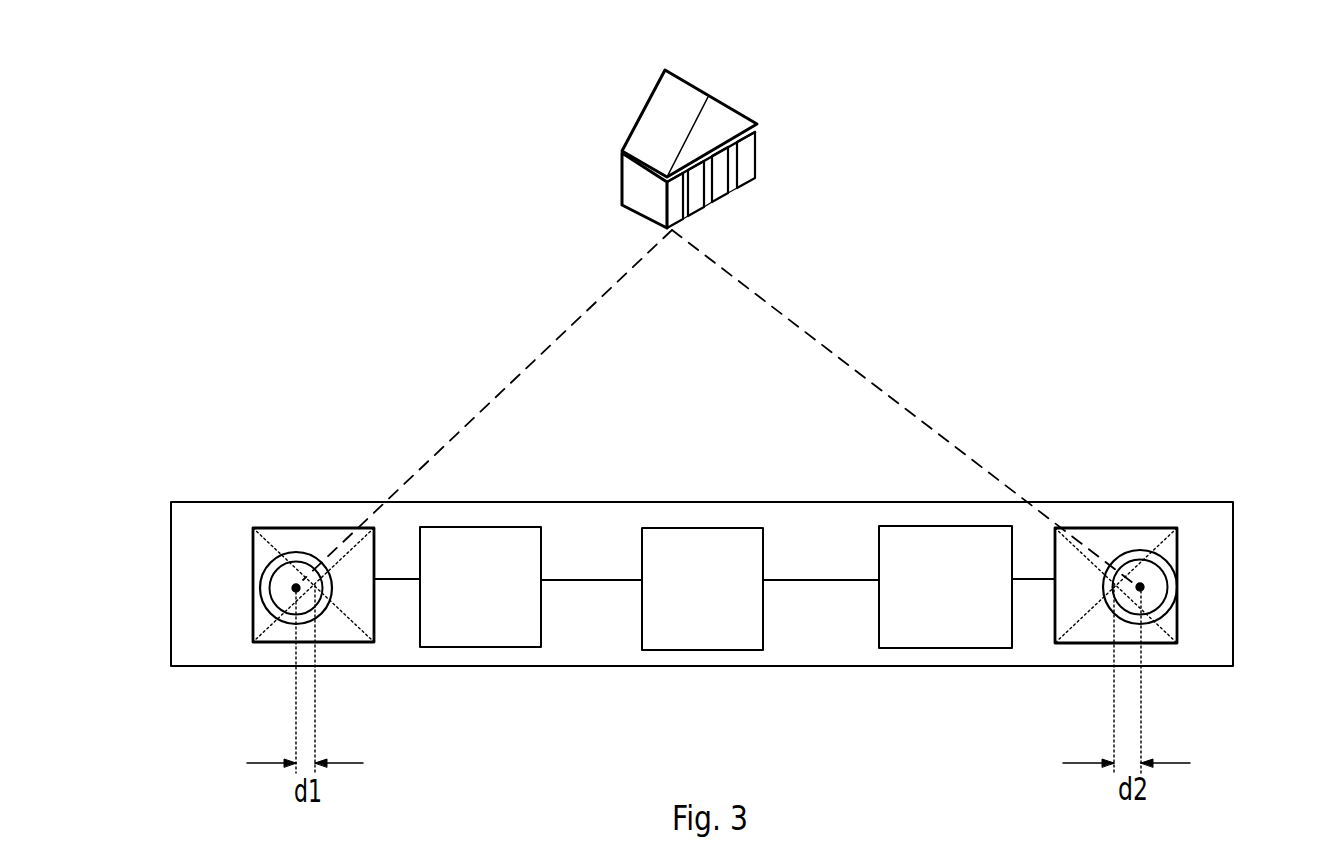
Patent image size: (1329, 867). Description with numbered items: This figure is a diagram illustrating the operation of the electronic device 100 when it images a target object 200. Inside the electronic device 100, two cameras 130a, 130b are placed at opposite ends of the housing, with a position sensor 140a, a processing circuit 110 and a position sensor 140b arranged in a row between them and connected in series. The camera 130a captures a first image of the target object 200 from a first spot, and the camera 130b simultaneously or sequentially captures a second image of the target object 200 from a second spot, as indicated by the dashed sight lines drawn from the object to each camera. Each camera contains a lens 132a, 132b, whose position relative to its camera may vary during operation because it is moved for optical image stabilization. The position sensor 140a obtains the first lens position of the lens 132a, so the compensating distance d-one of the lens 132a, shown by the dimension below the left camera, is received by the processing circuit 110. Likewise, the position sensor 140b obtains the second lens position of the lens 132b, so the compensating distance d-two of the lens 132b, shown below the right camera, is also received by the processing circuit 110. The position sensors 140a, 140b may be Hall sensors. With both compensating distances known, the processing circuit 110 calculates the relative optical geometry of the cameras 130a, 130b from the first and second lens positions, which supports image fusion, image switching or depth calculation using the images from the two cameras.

The electronic device 100 is at (1233, 546).
The target object 200 is at (640, 121).
The processing circuit 110 is at (702, 589).
The camera 130a is at (302, 528).
The camera 130b is at (1102, 528).
The lens 132a is at (319, 616).
The lens 132b is at (1168, 608).
The position sensor 140a is at (480, 587).
The position sensor 140b is at (945, 587).